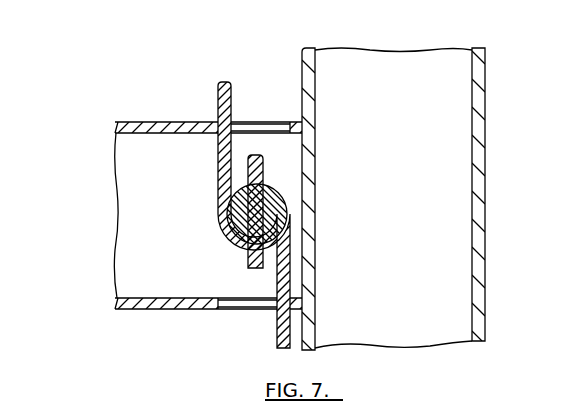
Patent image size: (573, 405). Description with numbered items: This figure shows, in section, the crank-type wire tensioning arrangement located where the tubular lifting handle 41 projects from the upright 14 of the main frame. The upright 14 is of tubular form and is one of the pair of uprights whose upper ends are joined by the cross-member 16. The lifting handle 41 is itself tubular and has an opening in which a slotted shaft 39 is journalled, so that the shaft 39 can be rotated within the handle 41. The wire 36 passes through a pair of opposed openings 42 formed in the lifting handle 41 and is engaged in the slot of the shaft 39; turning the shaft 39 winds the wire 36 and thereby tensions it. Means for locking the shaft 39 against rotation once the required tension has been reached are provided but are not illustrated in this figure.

The upright 14 is at (401, 173).
The cross-member 16 is at (170, 121).
The wire 36 is at (218, 92).
The slotted shaft 39 is at (232, 242).
The lifting handle 41 is at (142, 247).
The opposed openings 42 is at (252, 121).